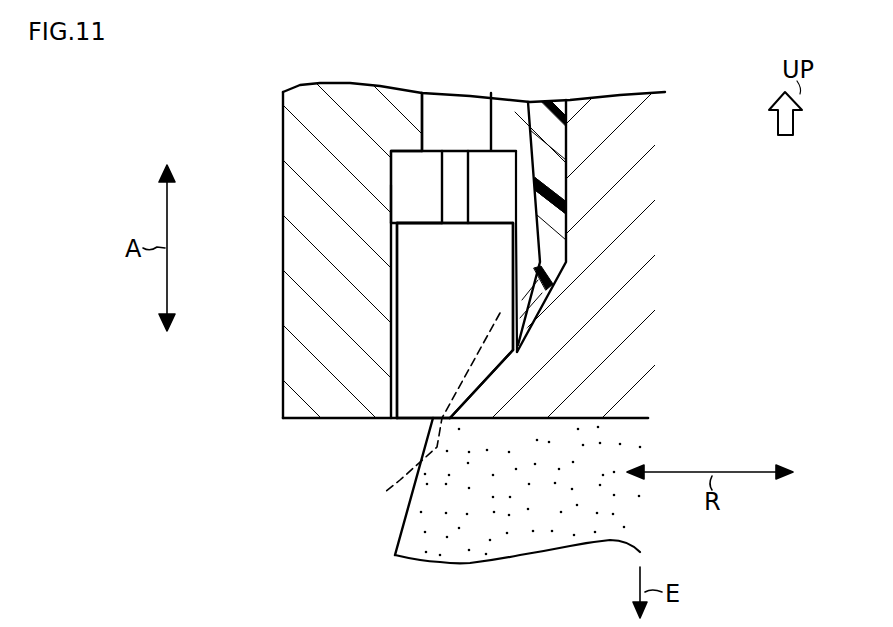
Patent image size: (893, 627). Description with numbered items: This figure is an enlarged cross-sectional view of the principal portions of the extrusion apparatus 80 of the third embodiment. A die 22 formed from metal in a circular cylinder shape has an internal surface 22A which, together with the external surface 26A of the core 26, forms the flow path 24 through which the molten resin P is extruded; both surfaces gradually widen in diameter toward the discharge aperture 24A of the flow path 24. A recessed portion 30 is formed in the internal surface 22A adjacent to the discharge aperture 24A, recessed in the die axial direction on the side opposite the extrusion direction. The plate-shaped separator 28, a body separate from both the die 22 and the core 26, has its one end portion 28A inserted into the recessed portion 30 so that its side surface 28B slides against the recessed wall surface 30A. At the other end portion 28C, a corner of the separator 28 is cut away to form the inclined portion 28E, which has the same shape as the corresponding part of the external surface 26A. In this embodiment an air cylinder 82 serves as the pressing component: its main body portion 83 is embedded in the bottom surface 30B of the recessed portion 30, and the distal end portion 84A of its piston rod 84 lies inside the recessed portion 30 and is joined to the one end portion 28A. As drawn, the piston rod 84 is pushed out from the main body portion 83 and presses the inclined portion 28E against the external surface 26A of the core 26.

The extrusion apparatus 80 is at (215, 102).
The die 22 is at (268, 390).
The internal surface 22A is at (533, 165).
The main body portion 83 is at (419, 110).
The air cylinder 82 is at (500, 122).
The piston rod 84 is at (476, 183).
The distal end portion 84A is at (438, 223).
The recessed portion 30 is at (402, 167).
The recessed wall surface 30A is at (392, 203).
The bottom surface 30B is at (559, 178).
The separator 28 is at (553, 206).
The one end portion 28A is at (491, 224).
The side surface 28B is at (392, 335).
The other end portion 28C is at (412, 421).
The inclined portion 28E is at (483, 392).
The core 26 is at (579, 428).
The external surface 26A is at (566, 128).
The flow path 24 is at (572, 163).
The discharge aperture 24A is at (425, 423).
The molten resin P is at (396, 553).